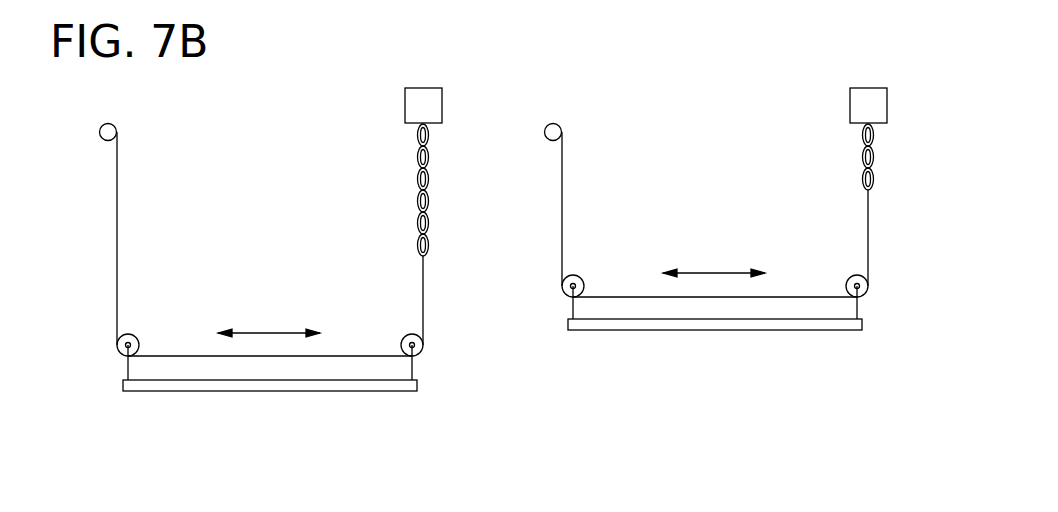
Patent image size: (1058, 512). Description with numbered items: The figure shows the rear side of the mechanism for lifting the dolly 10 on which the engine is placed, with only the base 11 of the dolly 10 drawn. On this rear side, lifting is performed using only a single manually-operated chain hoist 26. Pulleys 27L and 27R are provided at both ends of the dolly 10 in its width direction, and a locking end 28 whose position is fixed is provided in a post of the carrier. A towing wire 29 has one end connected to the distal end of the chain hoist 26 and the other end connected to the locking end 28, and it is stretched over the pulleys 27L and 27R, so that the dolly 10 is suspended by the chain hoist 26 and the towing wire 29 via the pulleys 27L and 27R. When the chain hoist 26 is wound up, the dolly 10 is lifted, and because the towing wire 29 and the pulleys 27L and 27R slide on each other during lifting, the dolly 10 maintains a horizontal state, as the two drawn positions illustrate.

The dolly 10 is at (492, 369).
The base 11 is at (272, 391).
The chain hoist 26 is at (422, 178).
The pulley 27L is at (136, 336).
The pulley 27R is at (405, 339).
The locking end 28 is at (116, 129).
The towing wire 29 is at (117, 243).